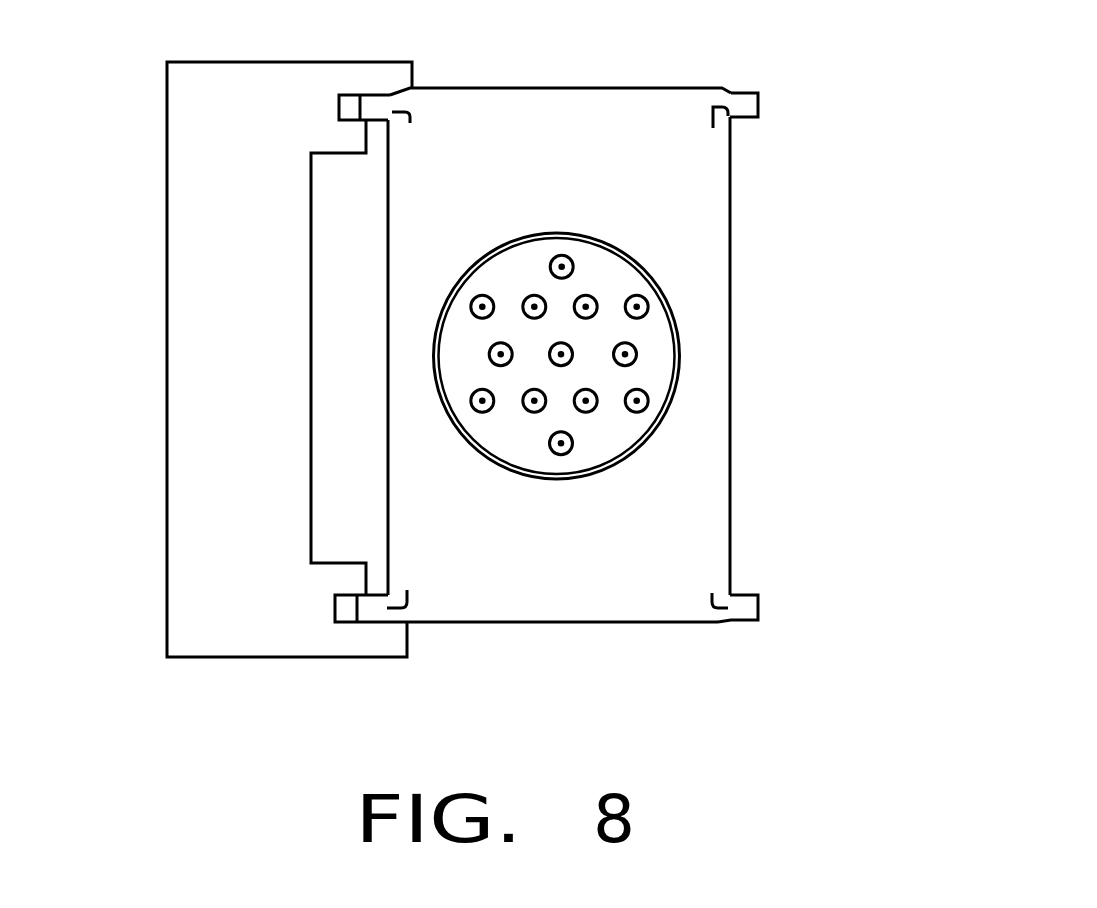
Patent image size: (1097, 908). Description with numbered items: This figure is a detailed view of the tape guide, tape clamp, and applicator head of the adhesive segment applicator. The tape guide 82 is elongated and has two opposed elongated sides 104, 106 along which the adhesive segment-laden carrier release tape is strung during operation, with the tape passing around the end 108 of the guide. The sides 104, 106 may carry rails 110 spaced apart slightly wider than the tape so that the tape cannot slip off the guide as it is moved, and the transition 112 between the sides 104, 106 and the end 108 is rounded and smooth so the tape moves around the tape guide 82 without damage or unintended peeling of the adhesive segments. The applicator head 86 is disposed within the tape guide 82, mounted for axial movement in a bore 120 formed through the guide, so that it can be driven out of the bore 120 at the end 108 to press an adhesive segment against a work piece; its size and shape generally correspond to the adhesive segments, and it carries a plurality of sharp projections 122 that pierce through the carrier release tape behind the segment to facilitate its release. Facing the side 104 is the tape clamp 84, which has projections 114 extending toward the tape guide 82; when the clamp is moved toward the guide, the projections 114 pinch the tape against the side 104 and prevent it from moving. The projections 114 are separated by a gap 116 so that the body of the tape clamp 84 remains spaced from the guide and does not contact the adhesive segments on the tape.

The tape guide 82 is at (733, 202).
The tape clamp 84 is at (166, 319).
The applicator head 86 is at (665, 367).
The side 104 is at (387, 402).
The side 106 is at (728, 433).
The end 108 is at (538, 120).
The rails 110 is at (762, 103).
The transition 112 is at (722, 158).
The projections 114 is at (358, 138).
The gap 116 is at (340, 303).
The bore 120 is at (678, 327).
The sharp projections 122 is at (561, 444).